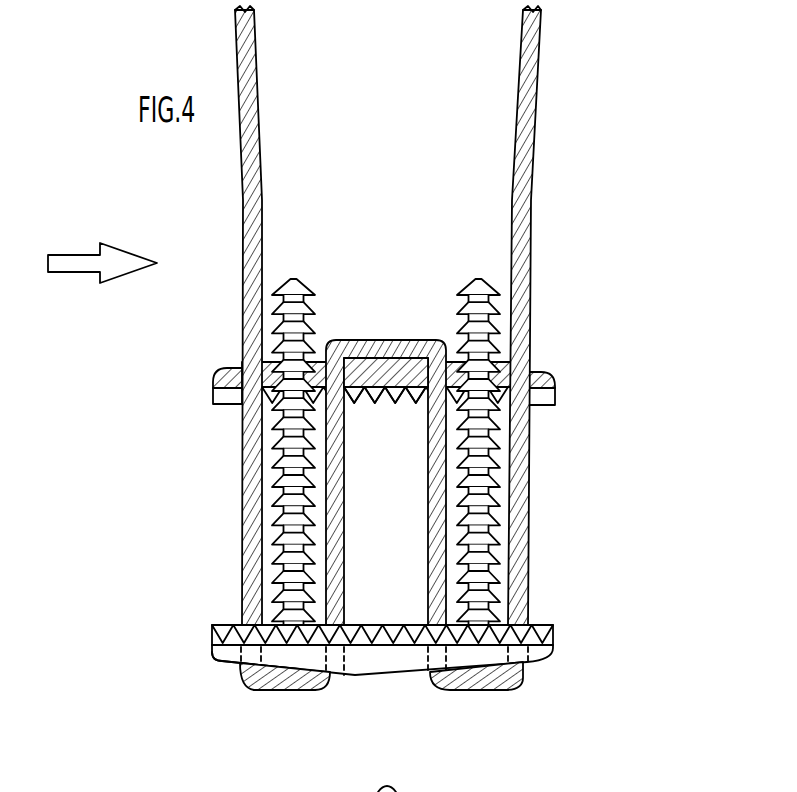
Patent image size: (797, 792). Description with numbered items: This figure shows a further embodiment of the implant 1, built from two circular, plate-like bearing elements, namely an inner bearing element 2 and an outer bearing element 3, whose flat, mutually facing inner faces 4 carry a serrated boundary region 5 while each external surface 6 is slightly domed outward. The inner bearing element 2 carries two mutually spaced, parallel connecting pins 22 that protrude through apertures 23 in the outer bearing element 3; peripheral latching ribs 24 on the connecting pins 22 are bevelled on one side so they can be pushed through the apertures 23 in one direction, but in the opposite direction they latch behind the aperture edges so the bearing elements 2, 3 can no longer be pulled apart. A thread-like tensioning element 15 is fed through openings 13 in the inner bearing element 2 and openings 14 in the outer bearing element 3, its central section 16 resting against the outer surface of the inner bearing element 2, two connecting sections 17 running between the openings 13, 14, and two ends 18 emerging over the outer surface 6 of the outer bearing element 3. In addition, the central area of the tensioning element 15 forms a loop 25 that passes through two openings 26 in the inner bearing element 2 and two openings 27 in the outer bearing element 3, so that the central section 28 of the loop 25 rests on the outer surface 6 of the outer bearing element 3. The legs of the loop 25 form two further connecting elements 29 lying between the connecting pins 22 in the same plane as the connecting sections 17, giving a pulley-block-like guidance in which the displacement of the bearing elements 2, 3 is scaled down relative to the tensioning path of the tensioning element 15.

The implant 1 is at (344, 399).
The inner bearing element 2 is at (353, 704).
The outer bearing element 3 is at (362, 479).
The inner faces 4 is at (394, 568).
The serrated boundary region 5 is at (409, 499).
The external surface 6 is at (412, 493).
The openings 13 is at (255, 704).
The openings 14 is at (231, 315).
The tensioning element 15 is at (571, 315).
The central section 16 is at (397, 723).
The connecting sections 17 is at (552, 315).
The ends 18 is at (549, 315).
The connecting pins 22 is at (382, 454).
The apertures 23 is at (310, 454).
The latching ribs 24 is at (527, 454).
The loop 25 is at (412, 431).
The openings 26 is at (294, 729).
The openings 27 is at (385, 433).
The central section 28 is at (412, 431).
The connecting elements 29 is at (412, 431).